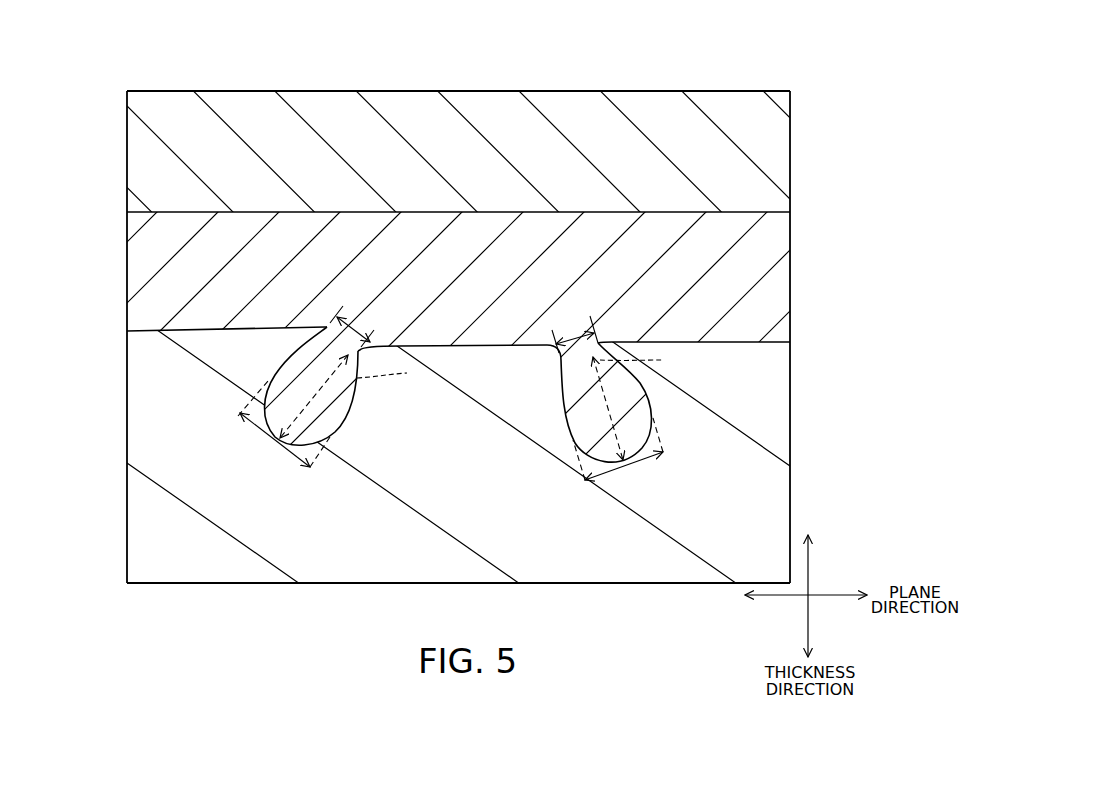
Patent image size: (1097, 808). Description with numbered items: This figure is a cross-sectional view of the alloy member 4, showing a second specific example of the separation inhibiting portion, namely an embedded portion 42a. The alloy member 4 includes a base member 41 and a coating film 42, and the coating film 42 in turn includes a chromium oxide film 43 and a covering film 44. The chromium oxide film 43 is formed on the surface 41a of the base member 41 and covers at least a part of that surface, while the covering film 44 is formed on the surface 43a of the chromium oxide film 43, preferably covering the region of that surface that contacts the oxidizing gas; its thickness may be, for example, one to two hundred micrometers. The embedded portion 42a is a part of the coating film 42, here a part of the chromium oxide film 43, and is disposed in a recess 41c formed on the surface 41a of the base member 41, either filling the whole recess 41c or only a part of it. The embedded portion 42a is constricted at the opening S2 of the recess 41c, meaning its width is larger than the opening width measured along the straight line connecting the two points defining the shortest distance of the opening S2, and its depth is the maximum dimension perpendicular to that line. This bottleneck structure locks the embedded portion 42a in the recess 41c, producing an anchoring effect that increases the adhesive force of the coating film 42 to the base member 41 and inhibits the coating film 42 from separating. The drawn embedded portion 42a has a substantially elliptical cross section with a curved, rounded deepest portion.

The alloy member 4 is at (796, 77).
The base member 41 is at (788, 405).
The surface of the base member 41a is at (165, 327).
The recess 41c is at (356, 408).
The coating film 42 is at (908, 168).
The embedded portion 42a is at (328, 427).
The chromium oxide film 43 is at (785, 230).
The surface of the chromium oxide film 43a is at (167, 211).
The covering film 44 is at (787, 179).
The opening S2 is at (327, 338).